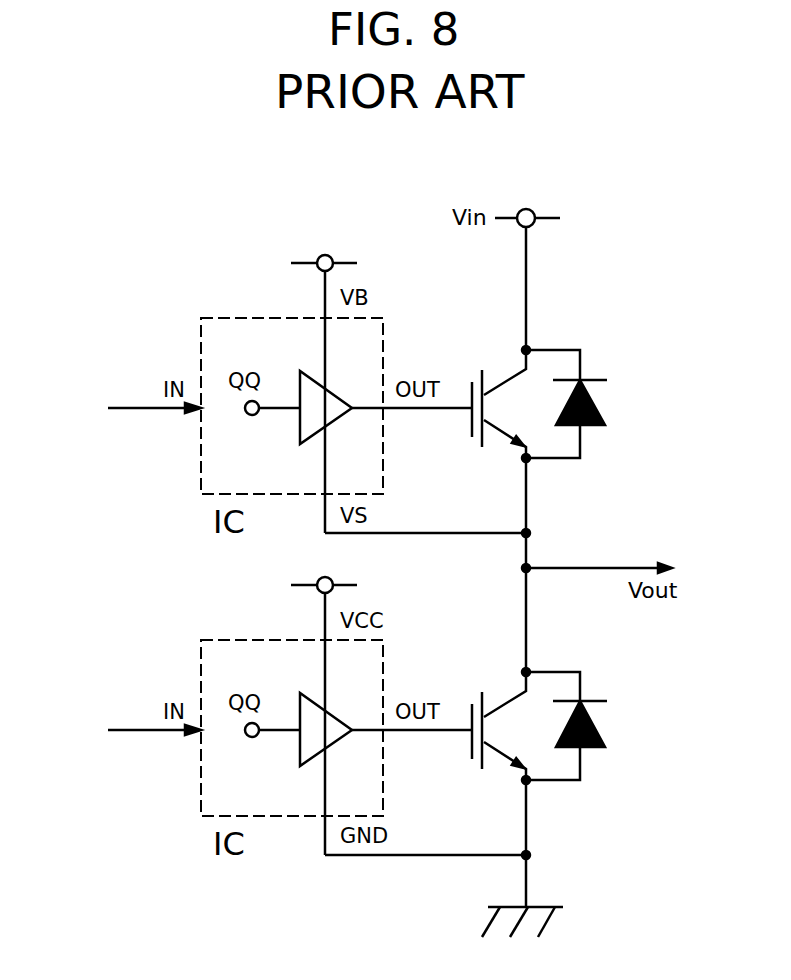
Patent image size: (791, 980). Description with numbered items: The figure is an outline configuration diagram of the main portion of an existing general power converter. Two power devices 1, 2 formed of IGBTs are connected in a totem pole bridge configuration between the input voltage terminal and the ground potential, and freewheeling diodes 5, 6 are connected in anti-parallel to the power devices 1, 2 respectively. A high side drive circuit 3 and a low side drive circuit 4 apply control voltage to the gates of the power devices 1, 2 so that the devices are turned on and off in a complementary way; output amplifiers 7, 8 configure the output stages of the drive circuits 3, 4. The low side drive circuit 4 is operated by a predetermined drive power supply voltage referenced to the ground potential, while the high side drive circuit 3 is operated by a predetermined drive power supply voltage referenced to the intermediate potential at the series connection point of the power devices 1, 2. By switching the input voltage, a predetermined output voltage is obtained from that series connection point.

The power device 1 is at (502, 372).
The power device 2 is at (503, 693).
The drive circuit 3 is at (219, 348).
The drive circuit 4 is at (219, 669).
The freewheeling diode 5 is at (598, 408).
The freewheeling diode 6 is at (598, 728).
The output amplifier 7 is at (308, 415).
The output amplifier 8 is at (308, 740).